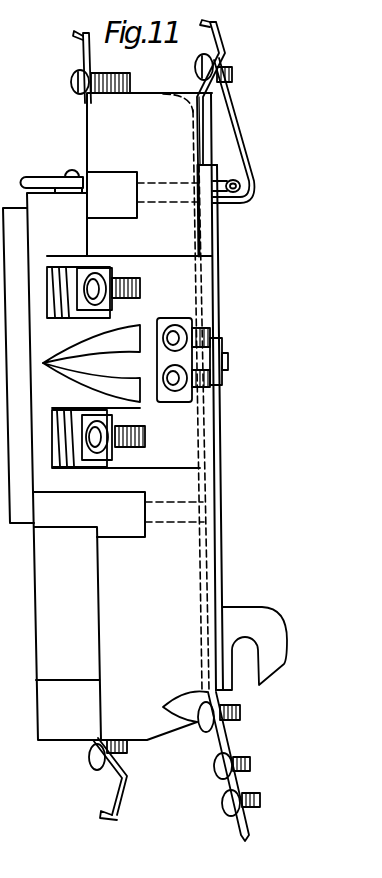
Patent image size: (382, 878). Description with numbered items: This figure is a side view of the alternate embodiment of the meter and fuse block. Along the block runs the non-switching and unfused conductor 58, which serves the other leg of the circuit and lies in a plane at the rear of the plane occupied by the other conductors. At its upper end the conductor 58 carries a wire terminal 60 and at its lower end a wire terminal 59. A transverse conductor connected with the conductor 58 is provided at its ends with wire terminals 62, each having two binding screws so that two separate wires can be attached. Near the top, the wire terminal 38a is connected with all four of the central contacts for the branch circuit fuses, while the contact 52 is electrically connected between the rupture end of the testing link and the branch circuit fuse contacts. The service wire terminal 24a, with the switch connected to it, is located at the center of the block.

The wire terminal 38a is at (83, 74).
The wire terminal 60 is at (200, 60).
The contact 52 is at (219, 93).
The wire terminal 62 is at (185, 318).
The non-switching and unfused conductor 58 is at (207, 578).
The wire terminal 59 is at (233, 725).
The service wire terminal 24a is at (122, 758).